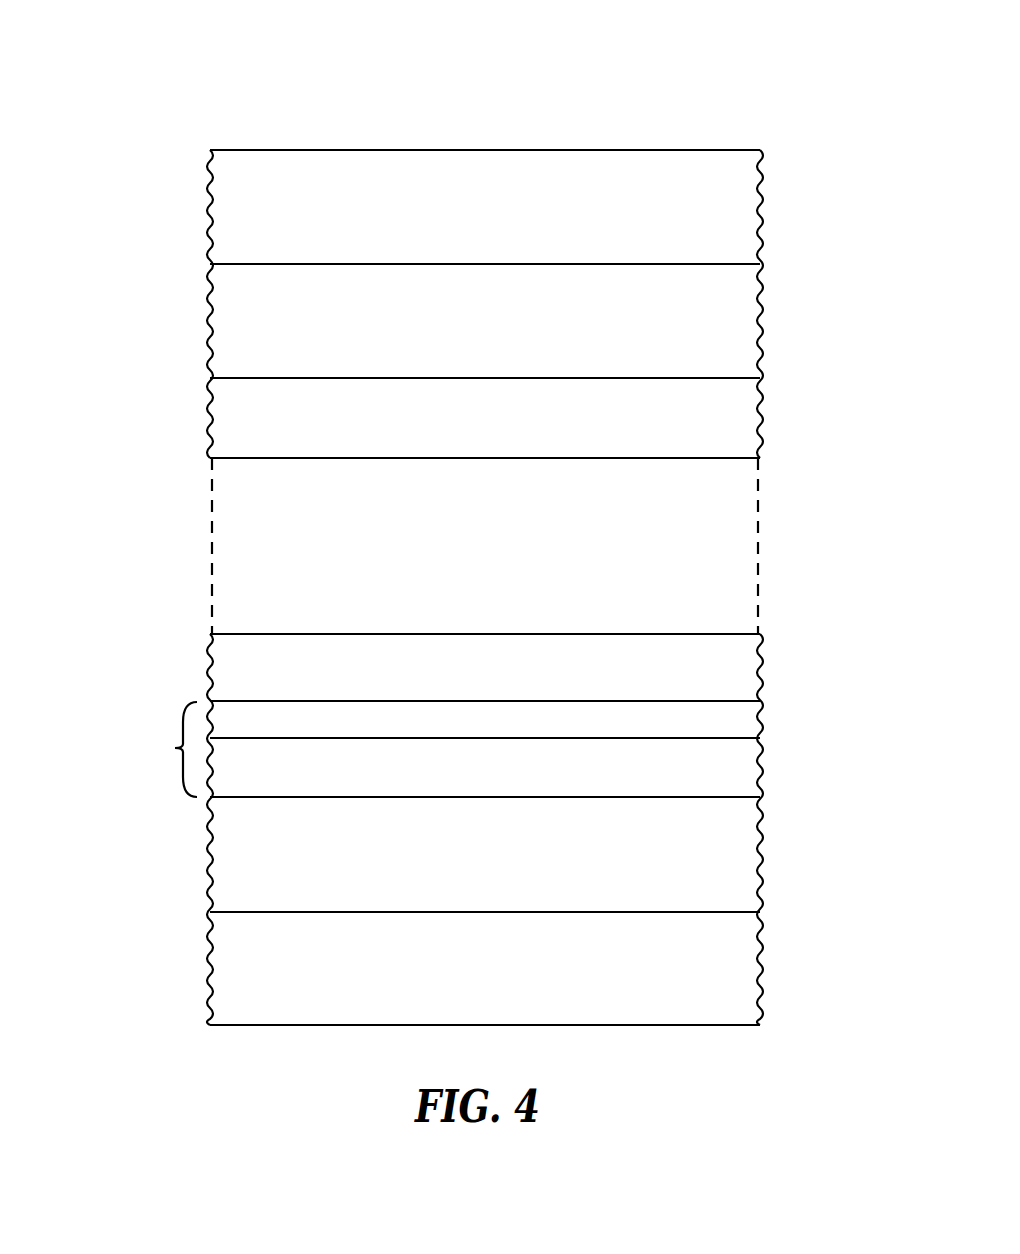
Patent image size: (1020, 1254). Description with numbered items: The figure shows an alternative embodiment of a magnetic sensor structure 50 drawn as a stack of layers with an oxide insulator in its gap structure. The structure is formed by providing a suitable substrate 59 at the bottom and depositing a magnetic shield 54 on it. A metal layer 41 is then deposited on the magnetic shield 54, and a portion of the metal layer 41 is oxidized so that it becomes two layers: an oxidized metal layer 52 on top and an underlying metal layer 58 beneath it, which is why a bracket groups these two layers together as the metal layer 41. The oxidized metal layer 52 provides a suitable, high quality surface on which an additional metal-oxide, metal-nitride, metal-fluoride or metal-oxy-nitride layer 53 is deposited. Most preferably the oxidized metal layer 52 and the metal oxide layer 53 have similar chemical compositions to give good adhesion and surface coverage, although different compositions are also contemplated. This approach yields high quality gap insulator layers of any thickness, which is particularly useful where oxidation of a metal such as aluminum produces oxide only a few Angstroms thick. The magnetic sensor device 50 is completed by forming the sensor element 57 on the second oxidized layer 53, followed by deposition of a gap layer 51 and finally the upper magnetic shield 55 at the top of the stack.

The magnetic sensor structure 50 is at (152, 100).
The magnetic shield 55 is at (762, 210).
The gap layer 51 is at (762, 335).
The sensor element 57 is at (762, 415).
The metal-oxide layer 53 is at (762, 648).
The oxidized metal layer 52 is at (762, 720).
The underlying metal layer 58 is at (762, 772).
The magnetic shield 54 is at (762, 860).
The substrate 59 is at (762, 985).
The metal layer 41 is at (175, 748).